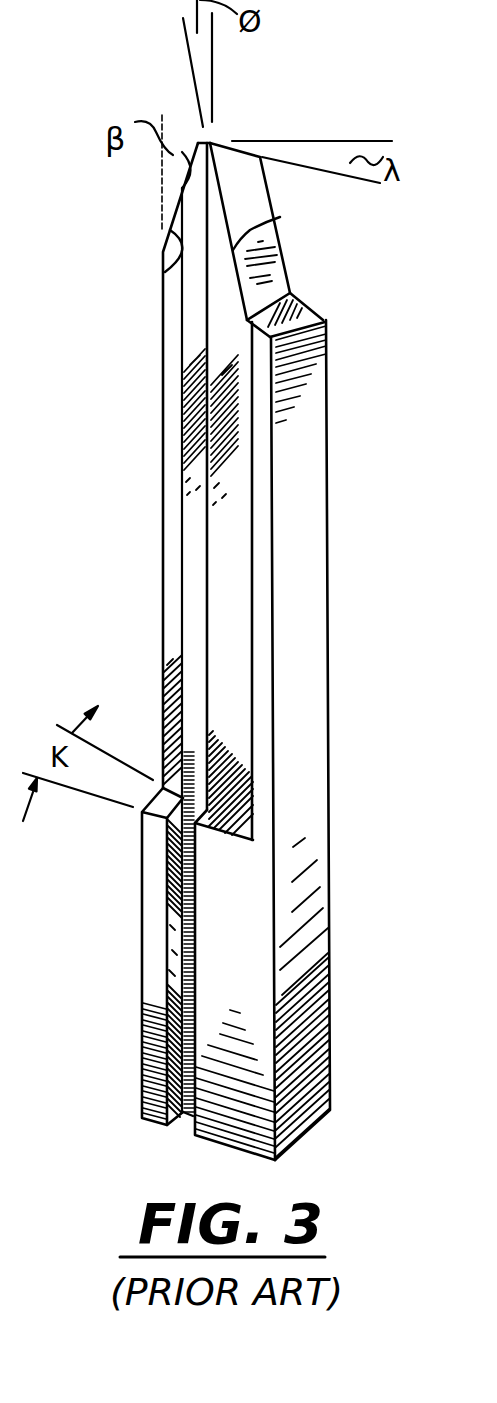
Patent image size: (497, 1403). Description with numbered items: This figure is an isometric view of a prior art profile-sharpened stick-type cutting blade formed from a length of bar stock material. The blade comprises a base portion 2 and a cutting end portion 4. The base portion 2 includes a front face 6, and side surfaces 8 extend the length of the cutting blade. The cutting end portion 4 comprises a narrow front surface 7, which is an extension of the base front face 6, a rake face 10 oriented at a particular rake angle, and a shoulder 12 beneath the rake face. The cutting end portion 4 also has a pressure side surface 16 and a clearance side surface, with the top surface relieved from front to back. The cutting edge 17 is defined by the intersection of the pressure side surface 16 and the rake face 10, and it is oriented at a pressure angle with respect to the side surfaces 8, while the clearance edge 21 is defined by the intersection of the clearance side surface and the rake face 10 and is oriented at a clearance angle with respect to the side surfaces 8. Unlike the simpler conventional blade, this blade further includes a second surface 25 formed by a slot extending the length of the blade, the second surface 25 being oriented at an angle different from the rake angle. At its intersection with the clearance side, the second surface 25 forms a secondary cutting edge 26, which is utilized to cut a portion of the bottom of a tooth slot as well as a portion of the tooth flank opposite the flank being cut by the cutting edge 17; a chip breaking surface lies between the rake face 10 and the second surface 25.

The base portion 2 is at (130, 963).
The cutting end portion 4 is at (148, 430).
The front face 6 is at (242, 952).
The narrow front surface 7 is at (262, 595).
The side surfaces 8 is at (297, 798).
The rake face 10 is at (233, 483).
The shoulder 12 is at (303, 307).
The pressure side surface 16 is at (277, 262).
The cutting edge 17 is at (280, 217).
The clearance edge 21 is at (165, 272).
The second surface 25 is at (192, 618).
The secondary cutting edge 26 is at (187, 163).